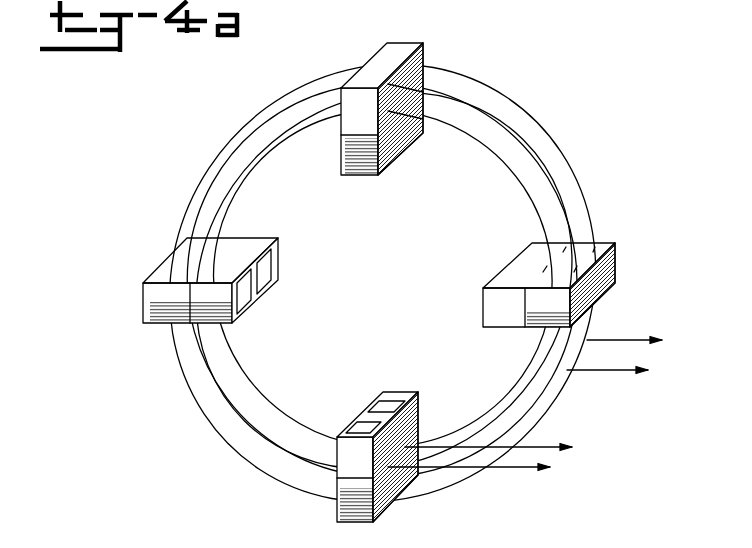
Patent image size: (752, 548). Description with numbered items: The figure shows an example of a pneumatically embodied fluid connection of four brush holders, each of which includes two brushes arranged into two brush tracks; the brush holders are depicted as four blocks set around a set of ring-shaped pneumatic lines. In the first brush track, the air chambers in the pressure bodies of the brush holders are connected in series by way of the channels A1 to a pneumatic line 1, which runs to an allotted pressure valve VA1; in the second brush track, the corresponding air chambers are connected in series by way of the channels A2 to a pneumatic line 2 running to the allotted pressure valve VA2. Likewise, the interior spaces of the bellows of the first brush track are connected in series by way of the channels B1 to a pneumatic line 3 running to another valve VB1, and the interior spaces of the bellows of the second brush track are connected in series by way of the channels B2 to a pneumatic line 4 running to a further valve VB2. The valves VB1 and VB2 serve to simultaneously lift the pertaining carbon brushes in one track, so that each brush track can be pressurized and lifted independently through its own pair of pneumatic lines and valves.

The pneumatic line 1 is at (339, 67).
The pneumatic line 2 is at (312, 91).
The pneumatic line 3 is at (235, 191).
The pneumatic line 4 is at (212, 216).
The channel A A1 is at (589, 257).
The channel A A2 is at (568, 276).
The channel B B1 is at (558, 257).
The channel B B2 is at (537, 276).
The pressure valve VA1 is at (642, 340).
The pressure valve VA2 is at (624, 371).
The valve VB1 is at (506, 447).
The valve VB2 is at (485, 467).